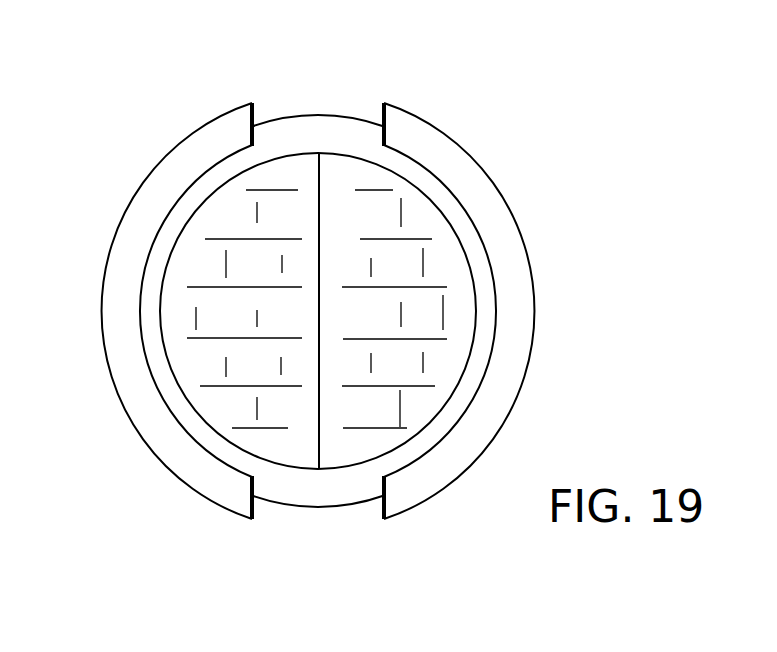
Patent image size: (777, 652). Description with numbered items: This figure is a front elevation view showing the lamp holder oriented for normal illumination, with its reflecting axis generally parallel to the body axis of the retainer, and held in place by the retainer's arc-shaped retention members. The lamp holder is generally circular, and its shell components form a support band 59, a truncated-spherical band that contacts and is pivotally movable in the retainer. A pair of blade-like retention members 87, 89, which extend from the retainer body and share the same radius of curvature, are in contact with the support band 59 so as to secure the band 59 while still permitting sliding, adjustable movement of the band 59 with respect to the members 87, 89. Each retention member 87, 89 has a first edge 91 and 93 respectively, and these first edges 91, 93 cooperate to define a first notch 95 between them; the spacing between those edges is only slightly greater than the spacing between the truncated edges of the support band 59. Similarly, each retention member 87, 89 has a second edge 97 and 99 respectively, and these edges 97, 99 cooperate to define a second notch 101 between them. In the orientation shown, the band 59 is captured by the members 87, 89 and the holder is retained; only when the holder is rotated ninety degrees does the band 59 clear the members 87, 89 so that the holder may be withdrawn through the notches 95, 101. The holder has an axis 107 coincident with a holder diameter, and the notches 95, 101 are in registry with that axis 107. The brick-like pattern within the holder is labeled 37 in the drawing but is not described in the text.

The brick lining 37 is at (397, 233).
The support band 59 is at (298, 125).
The retention member 87 is at (116, 232).
The retention member 89 is at (521, 245).
The first edge 91 is at (261, 108).
The first edge 93 is at (383, 117).
The first notch 95 is at (331, 90).
The second edge 97 is at (253, 512).
The second edge 99 is at (380, 513).
The second notch 101 is at (318, 536).
The axis 107 is at (318, 408).